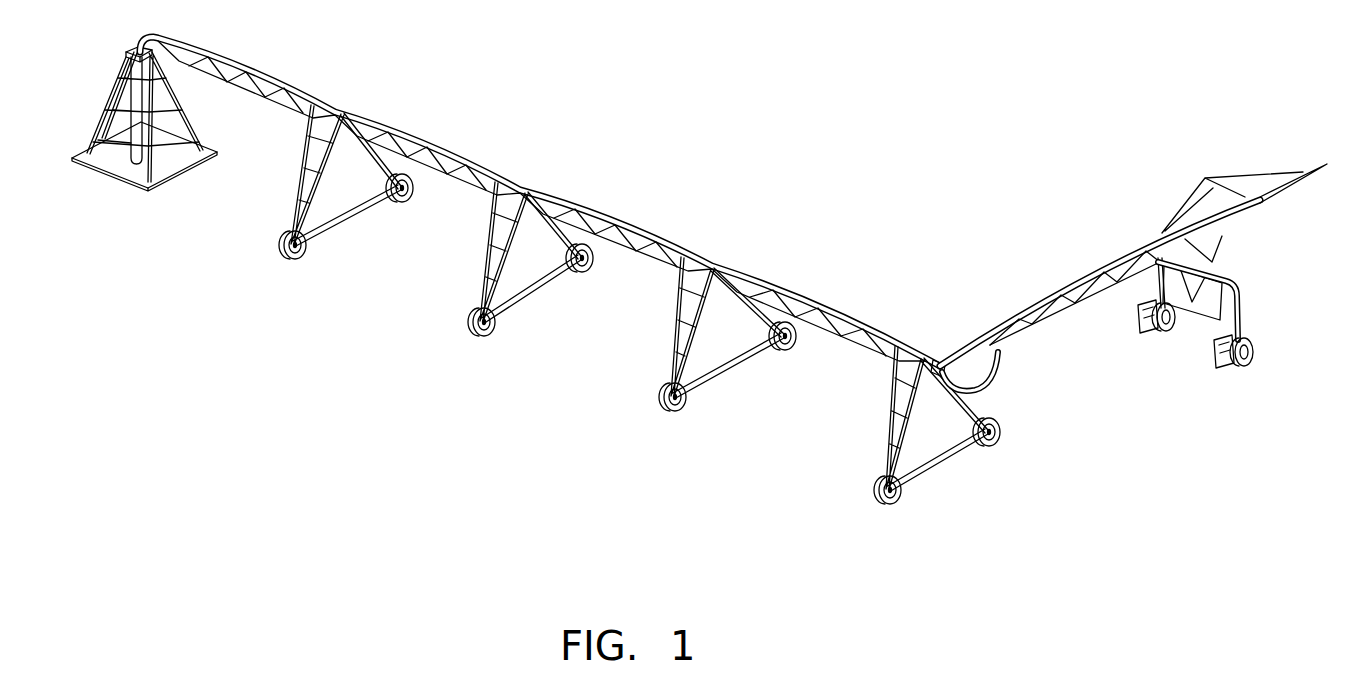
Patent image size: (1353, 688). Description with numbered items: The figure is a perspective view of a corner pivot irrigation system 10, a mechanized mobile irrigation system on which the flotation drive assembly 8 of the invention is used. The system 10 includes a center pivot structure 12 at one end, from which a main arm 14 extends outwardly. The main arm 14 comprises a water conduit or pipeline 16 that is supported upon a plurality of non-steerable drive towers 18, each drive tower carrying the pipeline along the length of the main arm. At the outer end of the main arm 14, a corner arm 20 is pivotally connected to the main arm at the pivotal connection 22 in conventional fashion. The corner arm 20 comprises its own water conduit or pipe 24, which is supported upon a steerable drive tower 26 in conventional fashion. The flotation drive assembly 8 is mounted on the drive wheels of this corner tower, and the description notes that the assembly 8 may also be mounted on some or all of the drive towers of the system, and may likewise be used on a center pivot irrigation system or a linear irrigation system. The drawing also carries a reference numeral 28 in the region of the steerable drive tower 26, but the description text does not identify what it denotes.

The corner pivot irrigation system 10 is at (657, 115).
The center pivot structure 12 is at (163, 137).
The main arm 14 is at (475, 135).
The water conduit or pipeline 16 is at (636, 222).
The non-steerable drive towers 18 is at (290, 200).
The corner arm 20 is at (1085, 245).
The pivotal connection 22 is at (947, 358).
The water conduit or pipe 24 is at (1048, 290).
The steerable drive tower 26 is at (1245, 292).
The support frame 28 is at (1223, 262).
The flotation drive assembly 8 is at (1122, 331).